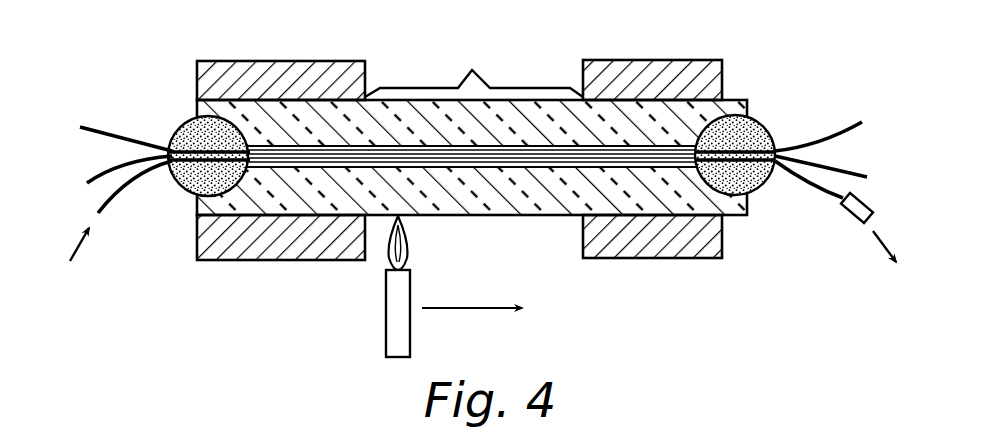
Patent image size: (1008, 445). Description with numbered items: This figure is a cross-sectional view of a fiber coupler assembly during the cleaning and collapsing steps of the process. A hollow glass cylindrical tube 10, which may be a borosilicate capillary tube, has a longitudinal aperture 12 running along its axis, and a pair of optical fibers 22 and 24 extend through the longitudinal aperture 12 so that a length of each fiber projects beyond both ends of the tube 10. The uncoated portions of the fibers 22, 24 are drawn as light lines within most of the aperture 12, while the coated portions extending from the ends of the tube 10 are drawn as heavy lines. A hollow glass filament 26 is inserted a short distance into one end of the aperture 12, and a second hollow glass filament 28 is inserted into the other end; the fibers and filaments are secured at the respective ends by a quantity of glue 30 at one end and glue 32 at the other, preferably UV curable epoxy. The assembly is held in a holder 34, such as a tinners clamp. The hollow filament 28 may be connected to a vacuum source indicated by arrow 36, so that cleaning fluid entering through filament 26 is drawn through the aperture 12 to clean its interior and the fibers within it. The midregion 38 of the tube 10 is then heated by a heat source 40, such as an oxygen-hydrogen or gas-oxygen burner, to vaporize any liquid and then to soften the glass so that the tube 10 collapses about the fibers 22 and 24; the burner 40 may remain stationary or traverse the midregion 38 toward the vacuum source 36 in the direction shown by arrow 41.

The hollow glass cylindrical tube 10 is at (499, 220).
The longitudinal aperture 12 is at (498, 164).
The optical fiber 22 is at (93, 128).
The optical fiber 24 is at (92, 175).
The hollow glass filament 26 is at (125, 196).
The second hollow glass filament 28 is at (828, 198).
The glue 30 is at (182, 137).
The glue 32 is at (775, 188).
The holder 34 is at (270, 61).
The vacuum source 36 is at (877, 235).
The midregion 38 is at (474, 66).
The heat source 40 is at (385, 317).
The arrow 41 is at (460, 310).